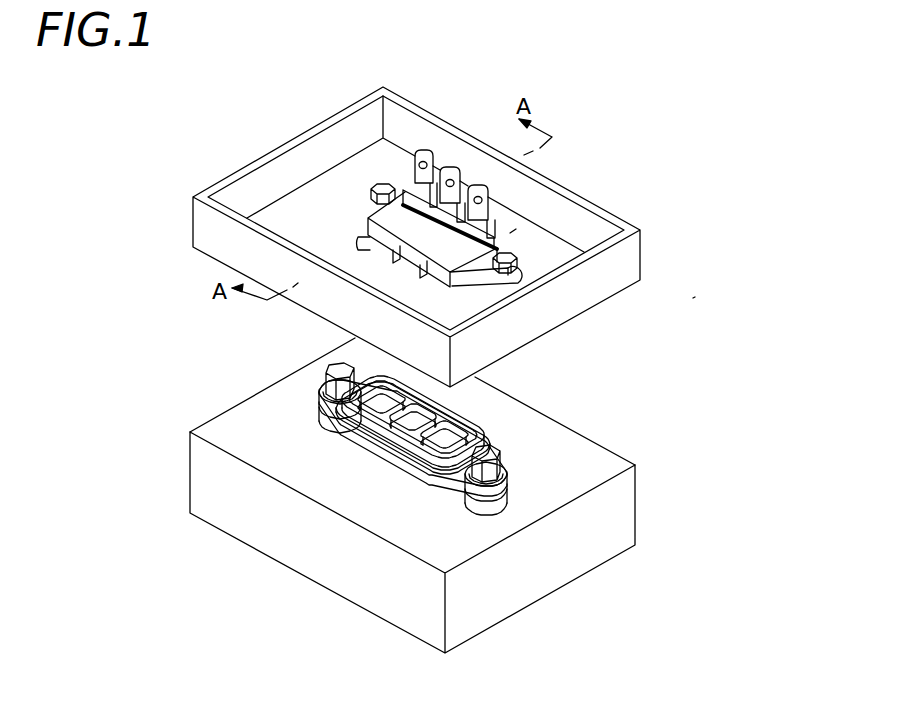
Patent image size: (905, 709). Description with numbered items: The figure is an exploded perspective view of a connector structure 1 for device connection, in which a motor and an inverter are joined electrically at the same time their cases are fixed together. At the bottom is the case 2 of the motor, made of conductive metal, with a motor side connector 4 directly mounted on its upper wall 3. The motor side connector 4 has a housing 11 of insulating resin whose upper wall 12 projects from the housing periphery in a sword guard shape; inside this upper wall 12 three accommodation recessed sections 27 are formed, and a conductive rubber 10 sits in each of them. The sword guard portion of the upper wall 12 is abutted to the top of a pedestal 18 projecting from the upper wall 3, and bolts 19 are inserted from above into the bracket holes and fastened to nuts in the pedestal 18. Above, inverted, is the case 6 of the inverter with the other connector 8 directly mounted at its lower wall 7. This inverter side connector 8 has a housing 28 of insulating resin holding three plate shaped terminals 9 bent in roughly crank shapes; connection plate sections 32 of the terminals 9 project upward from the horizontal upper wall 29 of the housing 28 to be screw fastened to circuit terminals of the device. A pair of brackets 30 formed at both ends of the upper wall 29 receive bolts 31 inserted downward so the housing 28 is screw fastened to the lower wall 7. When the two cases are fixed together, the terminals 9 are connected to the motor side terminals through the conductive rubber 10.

The connector structure for device connection 1 is at (693, 298).
The case 2 is at (637, 505).
The upper wall 3 is at (567, 456).
The motor side connector 4 is at (416, 436).
The case 6 is at (648, 256).
The lower wall 7 is at (611, 219).
The inverter side connector 8 is at (562, 250).
The terminals 9 is at (480, 184).
The conductive rubber 10 is at (454, 428).
The housing 11 is at (470, 410).
The upper wall 12 is at (492, 438).
The pedestal 18 is at (446, 484).
The bolts 19 is at (340, 372).
The accommodation recessed sections 27 is at (382, 436).
The housing 28 is at (373, 208).
The upper wall 29 is at (400, 215).
The brackets 30 is at (500, 278).
The bolts 31 is at (518, 262).
The connection plate sections 32 is at (513, 230).